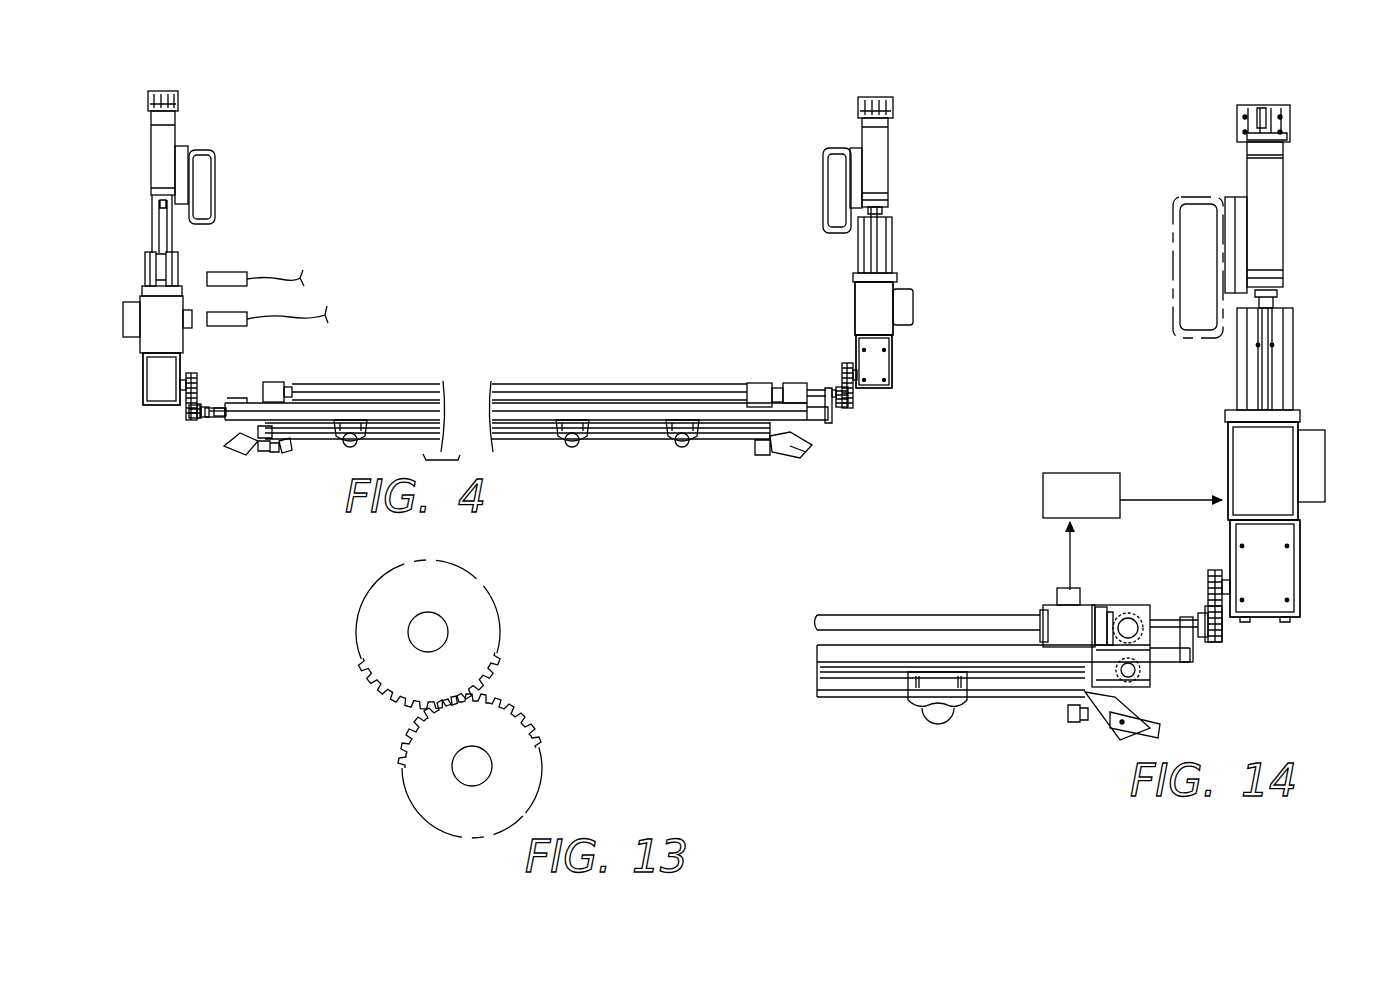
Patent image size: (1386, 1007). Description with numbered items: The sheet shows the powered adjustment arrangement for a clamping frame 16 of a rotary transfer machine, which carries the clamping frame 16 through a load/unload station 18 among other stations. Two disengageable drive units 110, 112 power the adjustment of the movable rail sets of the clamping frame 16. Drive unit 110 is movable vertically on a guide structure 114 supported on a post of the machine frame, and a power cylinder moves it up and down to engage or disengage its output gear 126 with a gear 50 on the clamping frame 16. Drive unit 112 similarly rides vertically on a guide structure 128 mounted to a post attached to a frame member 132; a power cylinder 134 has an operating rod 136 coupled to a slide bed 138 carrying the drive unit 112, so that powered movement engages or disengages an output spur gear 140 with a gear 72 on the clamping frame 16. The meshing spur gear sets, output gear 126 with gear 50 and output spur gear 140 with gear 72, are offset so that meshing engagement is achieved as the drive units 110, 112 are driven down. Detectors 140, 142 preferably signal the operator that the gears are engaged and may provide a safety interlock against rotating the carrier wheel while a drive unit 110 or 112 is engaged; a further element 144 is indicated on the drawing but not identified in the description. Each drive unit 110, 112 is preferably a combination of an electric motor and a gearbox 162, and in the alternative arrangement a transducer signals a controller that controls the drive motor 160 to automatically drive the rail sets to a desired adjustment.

In FIG. 4, the clamping frame 16 is at (587, 333).
In FIG. 14, the clamping frame 16 is at (963, 610).
In FIG. 4, the load/unload station 18 is at (824, 188).
In FIG. 14, the load/unload station 18 is at (1172, 207).
In FIG. 4, the gear 50 is at (846, 399).
In FIG. 13, the gear 50 is at (545, 733).
In FIG. 14, the gear 50 is at (1217, 642).
In FIG. 4, the gear 72 is at (190, 423).
In FIG. 4, the drive unit 110 is at (928, 292).
In FIG. 14, the drive unit 110 is at (1358, 400).
In FIG. 4, the drive unit 112 is at (148, 349).
In FIG. 4, the guide structure 114 is at (886, 236).
In FIG. 14, the guide structure 114 is at (1292, 347).
In FIG. 4, the output gear 126 is at (843, 368).
In FIG. 13, the output gear 126 is at (500, 665).
In FIG. 14, the output gear 126 is at (1208, 573).
In FIG. 4, the guide structure 128 is at (142, 253).
In FIG. 4, the frame member 132 is at (190, 149).
In FIG. 4, the power cylinder 134 is at (163, 137).
In FIG. 4, the operating rod 136 is at (160, 217).
In FIG. 4, the slide bed 138 is at (142, 291).
In FIG. 4, the output spur gear 140 is at (198, 383).
In FIG. 4, the detector 142 is at (227, 268).
In FIG. 4, the supply line 144 is at (243, 325).
In FIG. 4, the drive motor 160 is at (160, 313).
In FIG. 14, the drive motor 160 is at (1243, 472).
In FIG. 4, the gearbox 162 is at (160, 388).
In FIG. 14, the gearbox 162 is at (1278, 588).